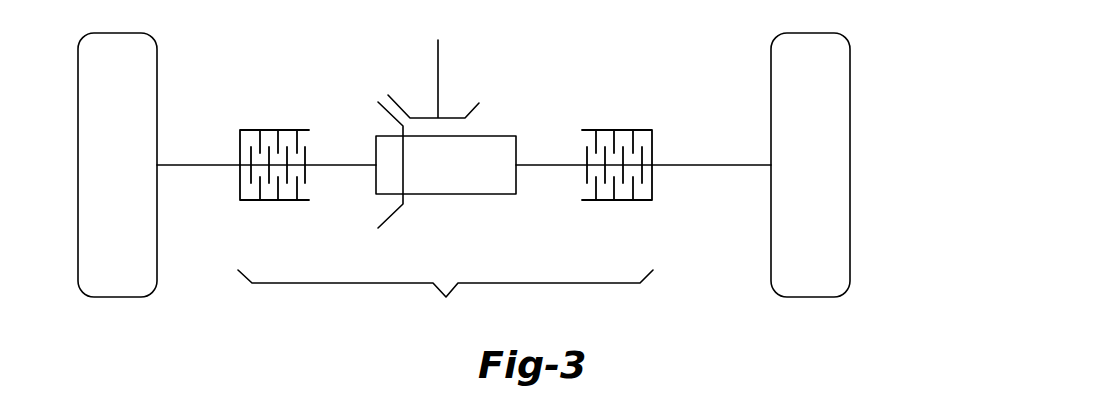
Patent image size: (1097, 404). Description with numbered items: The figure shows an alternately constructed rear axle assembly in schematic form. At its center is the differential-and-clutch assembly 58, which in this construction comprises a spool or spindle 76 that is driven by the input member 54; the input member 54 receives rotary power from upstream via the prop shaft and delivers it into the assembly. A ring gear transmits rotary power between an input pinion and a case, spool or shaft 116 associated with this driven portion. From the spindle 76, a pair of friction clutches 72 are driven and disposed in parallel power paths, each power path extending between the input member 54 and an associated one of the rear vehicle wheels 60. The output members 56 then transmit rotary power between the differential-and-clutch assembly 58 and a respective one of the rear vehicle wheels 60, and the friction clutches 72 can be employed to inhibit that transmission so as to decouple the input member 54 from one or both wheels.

The input member 54 is at (440, 48).
The output members 56 is at (198, 165).
The differential-and-clutch assembly 58 is at (445, 300).
The rear vehicle wheels 60 is at (95, 45).
The friction clutches 72 is at (245, 106).
The spindle 76 is at (495, 197).
The shaft 116 is at (435, 197).